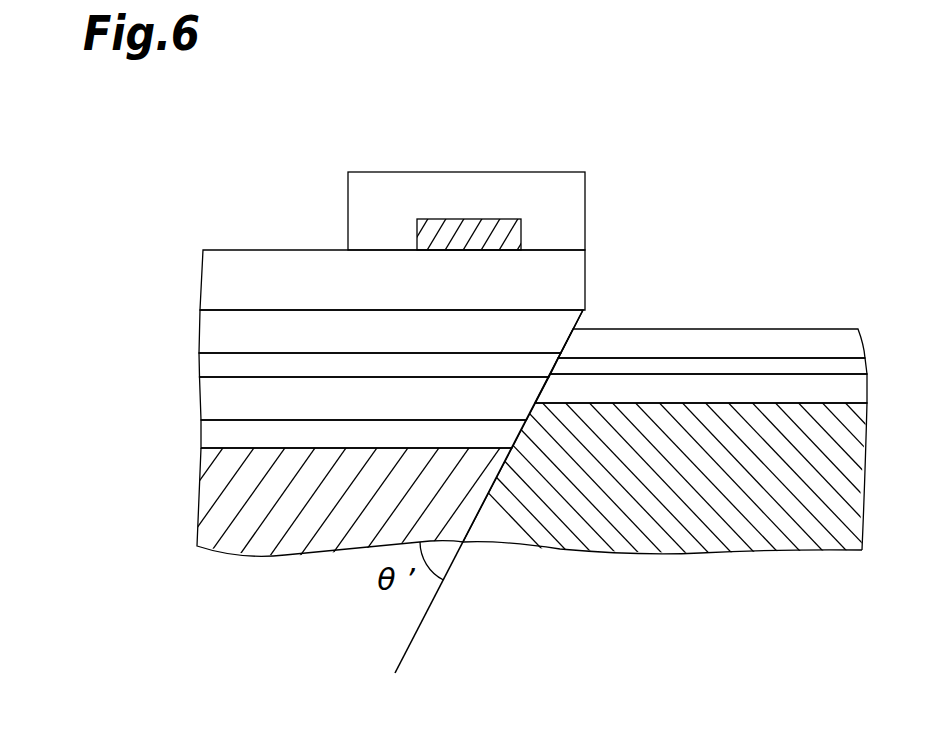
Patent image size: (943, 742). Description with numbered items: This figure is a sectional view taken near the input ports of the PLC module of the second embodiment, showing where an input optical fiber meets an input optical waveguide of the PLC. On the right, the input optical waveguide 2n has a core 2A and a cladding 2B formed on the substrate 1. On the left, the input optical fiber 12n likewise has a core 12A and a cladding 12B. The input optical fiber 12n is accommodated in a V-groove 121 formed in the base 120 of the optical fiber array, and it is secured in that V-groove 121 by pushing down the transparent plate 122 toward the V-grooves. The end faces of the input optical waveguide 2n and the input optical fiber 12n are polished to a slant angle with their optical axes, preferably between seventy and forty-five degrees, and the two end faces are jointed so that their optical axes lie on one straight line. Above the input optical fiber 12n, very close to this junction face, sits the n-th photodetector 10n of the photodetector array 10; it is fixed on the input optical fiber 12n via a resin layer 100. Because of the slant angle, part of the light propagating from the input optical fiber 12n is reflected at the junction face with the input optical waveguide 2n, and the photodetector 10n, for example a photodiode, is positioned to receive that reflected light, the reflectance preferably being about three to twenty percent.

The photodetector array 10 is at (497, 111).
The resin layer 100 is at (389, 183).
The photodetector 10n is at (468, 228).
The transparent plate 122 is at (203, 283).
The input optical fiber 12n is at (72, 313).
The cladding 12B is at (203, 334).
The core 12A is at (203, 365).
The V-groove 121 is at (233, 447).
The base 120 is at (208, 500).
The input optical waveguide 2n is at (822, 193).
The core 2A is at (708, 366).
The cladding 2B is at (801, 341).
The substrate 1 is at (712, 543).